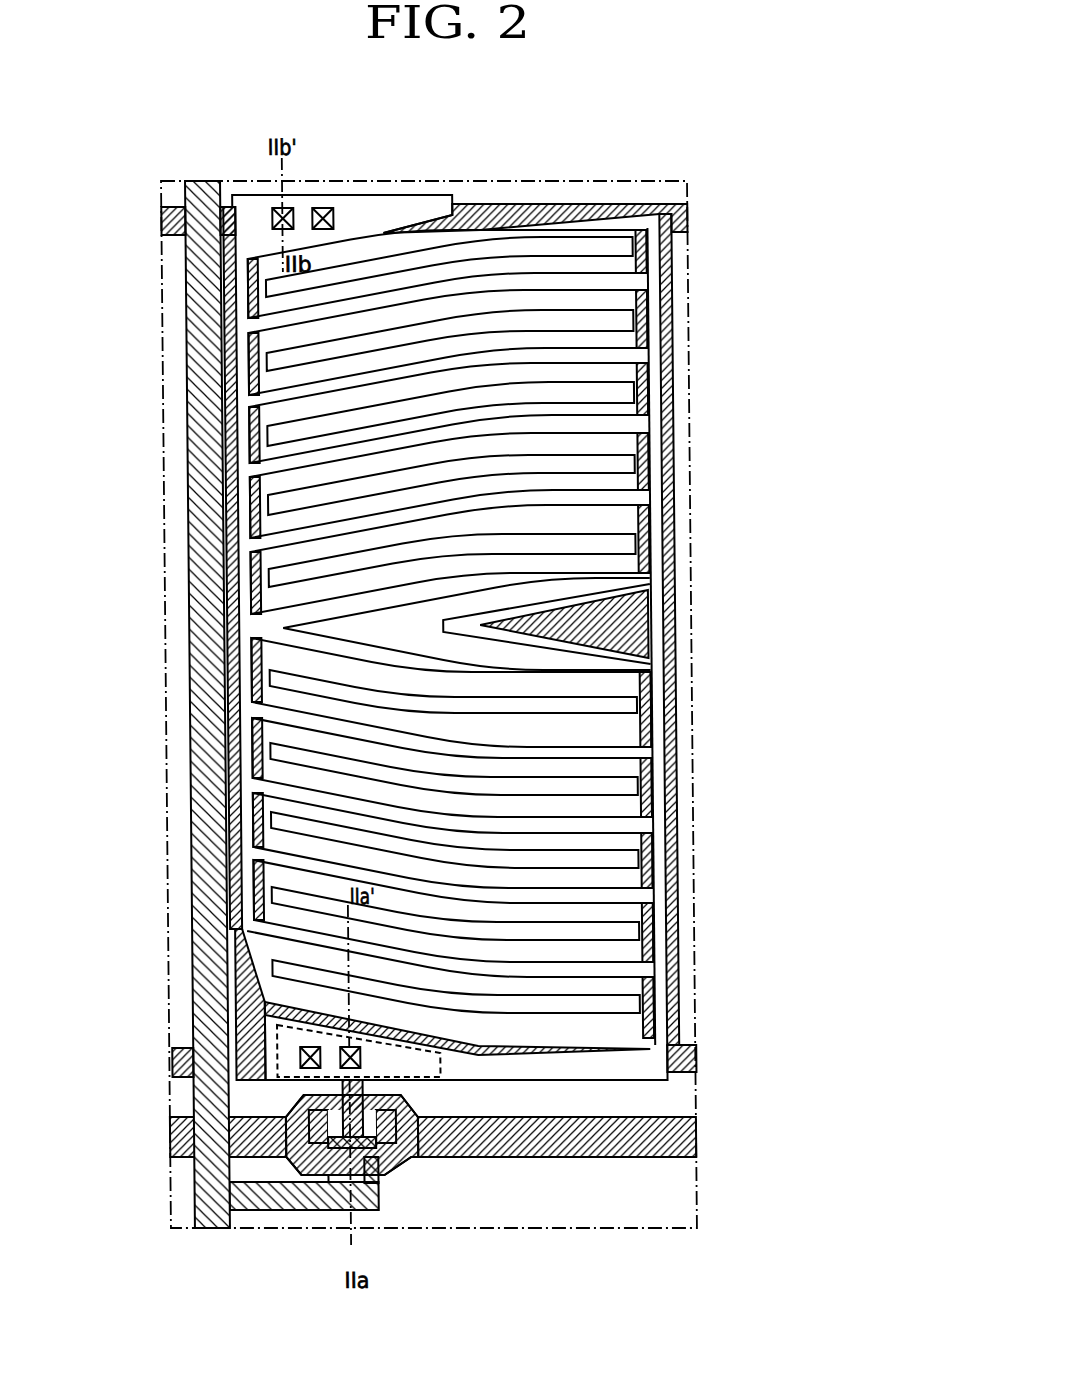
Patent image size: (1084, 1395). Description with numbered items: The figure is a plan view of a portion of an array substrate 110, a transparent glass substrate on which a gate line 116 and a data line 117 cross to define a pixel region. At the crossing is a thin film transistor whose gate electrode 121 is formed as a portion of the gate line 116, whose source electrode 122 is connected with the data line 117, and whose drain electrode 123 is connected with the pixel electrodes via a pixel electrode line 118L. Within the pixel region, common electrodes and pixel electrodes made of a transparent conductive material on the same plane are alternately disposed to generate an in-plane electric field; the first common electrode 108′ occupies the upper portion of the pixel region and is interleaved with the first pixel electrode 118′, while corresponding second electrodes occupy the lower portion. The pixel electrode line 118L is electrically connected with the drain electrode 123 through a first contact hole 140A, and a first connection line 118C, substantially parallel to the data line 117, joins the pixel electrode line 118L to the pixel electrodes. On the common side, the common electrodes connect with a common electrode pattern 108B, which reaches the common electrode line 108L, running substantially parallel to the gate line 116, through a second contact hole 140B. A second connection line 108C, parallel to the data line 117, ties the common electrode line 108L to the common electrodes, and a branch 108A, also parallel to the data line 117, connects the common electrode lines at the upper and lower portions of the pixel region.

The array substrate 110 is at (704, 177).
The gate line 116 is at (687, 1133).
The data line 117 is at (186, 893).
The gate electrode 121 is at (399, 1173).
The source electrode 122 is at (362, 1200).
The drain electrode 123 is at (319, 1138).
The branch 108A is at (664, 686).
The common electrode pattern 108B is at (400, 200).
The second connection line 108C is at (240, 746).
The common electrode line 108L is at (688, 1060).
The first common electrode 108′ is at (625, 543).
The first pixel electrode 118′ is at (582, 505).
The first connection line 118C is at (662, 779).
The pixel electrode line 118L is at (544, 1070).
The first contact hole 140A is at (292, 1060).
The second contact hole 140B is at (288, 210).